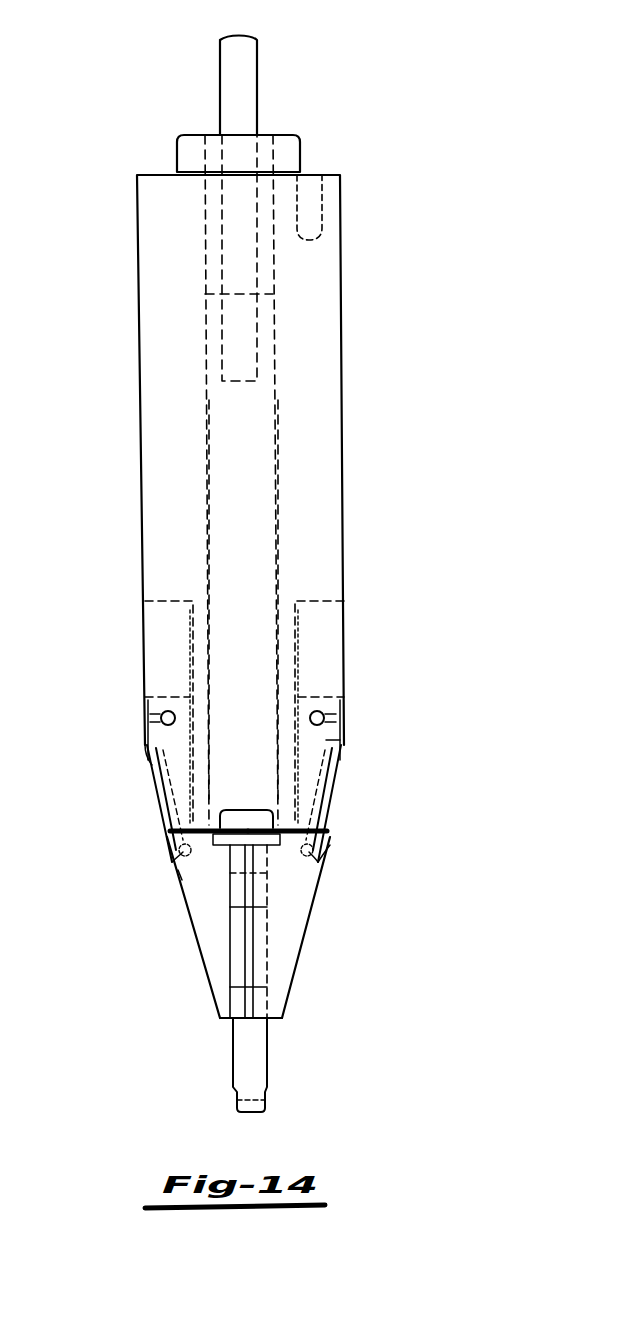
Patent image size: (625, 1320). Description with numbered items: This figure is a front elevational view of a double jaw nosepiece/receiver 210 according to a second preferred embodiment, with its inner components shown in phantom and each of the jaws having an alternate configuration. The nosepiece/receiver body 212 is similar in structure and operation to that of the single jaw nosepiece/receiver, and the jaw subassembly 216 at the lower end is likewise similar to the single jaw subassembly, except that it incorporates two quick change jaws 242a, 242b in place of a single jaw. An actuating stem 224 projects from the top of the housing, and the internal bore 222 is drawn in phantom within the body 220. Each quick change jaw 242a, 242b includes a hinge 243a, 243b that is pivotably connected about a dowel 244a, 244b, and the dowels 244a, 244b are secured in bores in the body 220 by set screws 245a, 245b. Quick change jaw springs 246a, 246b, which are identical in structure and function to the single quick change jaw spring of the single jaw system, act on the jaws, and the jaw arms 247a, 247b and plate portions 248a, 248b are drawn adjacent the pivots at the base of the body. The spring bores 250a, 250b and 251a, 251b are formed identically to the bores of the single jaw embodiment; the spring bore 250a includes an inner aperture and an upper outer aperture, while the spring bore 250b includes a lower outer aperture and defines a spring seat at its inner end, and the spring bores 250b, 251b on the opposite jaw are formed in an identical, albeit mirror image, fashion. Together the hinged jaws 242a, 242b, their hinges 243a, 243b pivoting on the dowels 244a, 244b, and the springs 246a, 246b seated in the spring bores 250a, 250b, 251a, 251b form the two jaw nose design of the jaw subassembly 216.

The double jaw nosepiece/receiver 210 is at (420, 161).
The nosepiece/receiver body 212 is at (397, 118).
The jaw subassembly 216 is at (251, 961).
The body 220 is at (320, 259).
The inner bore 222 is at (262, 433).
The actuating stem 224 is at (247, 63).
The quick change jaw 242a is at (212, 924).
The quick change jaw 242b is at (290, 922).
The hinge 243a is at (156, 770).
The hinge 243b is at (345, 762).
The dowel 244a is at (169, 702).
The dowel 244b is at (348, 710).
The set screw 245a is at (160, 722).
The set screw 245b is at (343, 721).
The quick change jaw spring 246a is at (168, 860).
The quick change jaw spring 246b is at (330, 855).
The first jaw arm 247a is at (180, 872).
The second jaw arm 247b is at (324, 875).
The first plate portion 248a is at (163, 835).
The second plate portion 248b is at (335, 820).
The spring bore 250a is at (322, 746).
The spring bore 250b is at (318, 847).
The spring bore 251a is at (168, 752).
The spring bore 251b is at (180, 912).